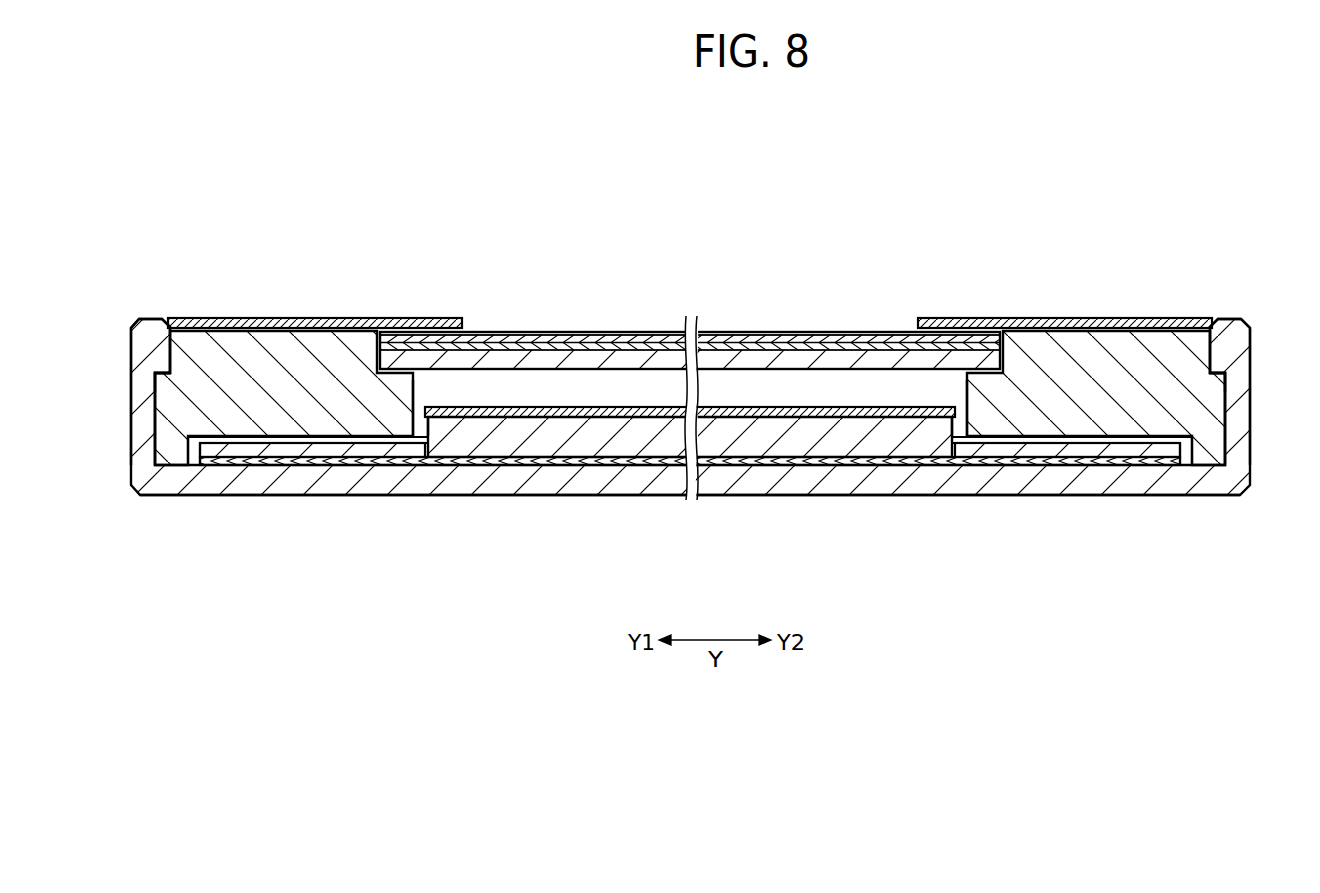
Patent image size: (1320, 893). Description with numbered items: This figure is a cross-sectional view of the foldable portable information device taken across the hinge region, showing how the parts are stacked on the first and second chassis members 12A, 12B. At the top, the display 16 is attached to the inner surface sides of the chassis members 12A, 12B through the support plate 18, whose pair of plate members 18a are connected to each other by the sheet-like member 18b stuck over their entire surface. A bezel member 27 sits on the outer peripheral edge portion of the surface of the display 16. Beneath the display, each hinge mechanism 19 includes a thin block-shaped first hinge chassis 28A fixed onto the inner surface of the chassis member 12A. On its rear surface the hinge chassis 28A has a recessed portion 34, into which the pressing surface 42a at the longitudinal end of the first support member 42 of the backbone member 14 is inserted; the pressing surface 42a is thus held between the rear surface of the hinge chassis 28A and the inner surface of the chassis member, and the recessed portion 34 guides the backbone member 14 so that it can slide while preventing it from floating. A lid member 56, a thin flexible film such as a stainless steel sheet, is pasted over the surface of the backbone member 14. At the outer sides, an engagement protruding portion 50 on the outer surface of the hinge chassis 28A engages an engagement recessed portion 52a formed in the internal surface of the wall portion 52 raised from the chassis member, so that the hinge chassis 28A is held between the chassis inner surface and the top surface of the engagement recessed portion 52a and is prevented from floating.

The first chassis member 12A is at (524, 505).
The second chassis member 12B is at (858, 505).
The backbone member 14 is at (690, 413).
The display 16 is at (690, 301).
The support plate 18 is at (690, 301).
The plate member 18a is at (708, 280).
The sheet-like member 18b is at (731, 340).
The hinge mechanism 19 is at (436, 397).
The bezel member 27 is at (272, 318).
The first hinge chassis 28A is at (337, 356).
The recessed portion 34 is at (232, 440).
The first support member 42 is at (597, 440).
The pressing surface 42a is at (310, 428).
The engagement protruding portion 50 is at (163, 432).
The wall portion 52 is at (131, 370).
The engagement recessed portion 52a is at (142, 407).
The lid member 56 is at (654, 408).